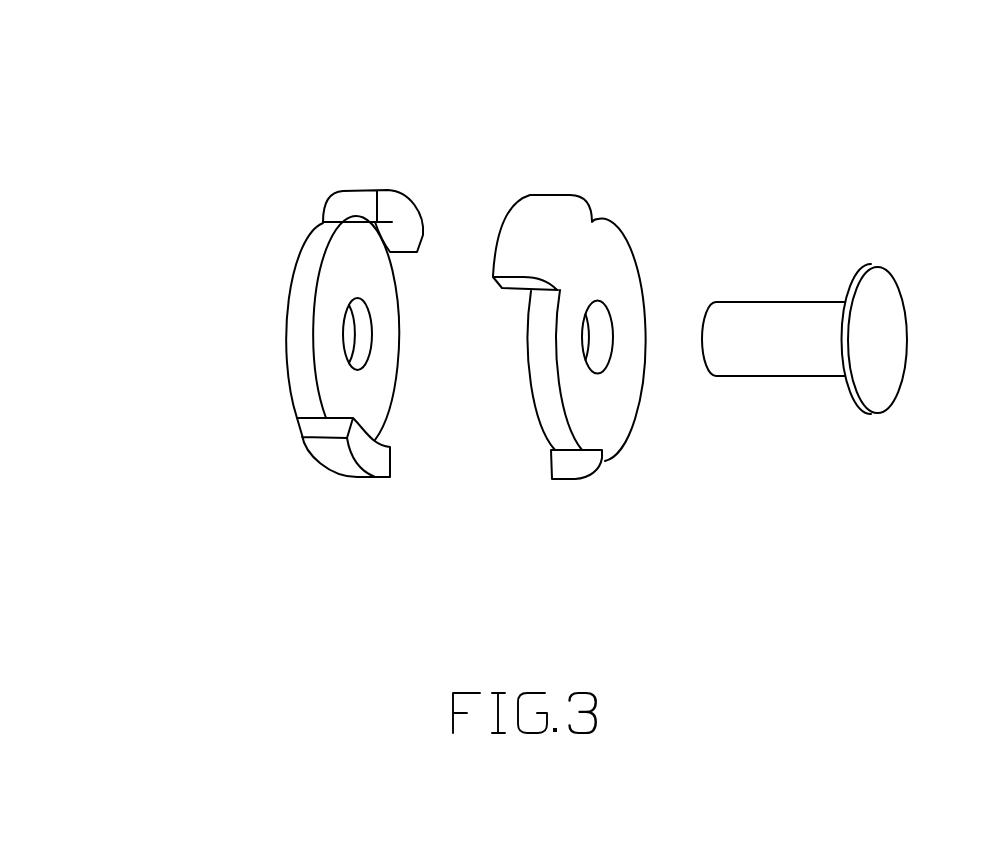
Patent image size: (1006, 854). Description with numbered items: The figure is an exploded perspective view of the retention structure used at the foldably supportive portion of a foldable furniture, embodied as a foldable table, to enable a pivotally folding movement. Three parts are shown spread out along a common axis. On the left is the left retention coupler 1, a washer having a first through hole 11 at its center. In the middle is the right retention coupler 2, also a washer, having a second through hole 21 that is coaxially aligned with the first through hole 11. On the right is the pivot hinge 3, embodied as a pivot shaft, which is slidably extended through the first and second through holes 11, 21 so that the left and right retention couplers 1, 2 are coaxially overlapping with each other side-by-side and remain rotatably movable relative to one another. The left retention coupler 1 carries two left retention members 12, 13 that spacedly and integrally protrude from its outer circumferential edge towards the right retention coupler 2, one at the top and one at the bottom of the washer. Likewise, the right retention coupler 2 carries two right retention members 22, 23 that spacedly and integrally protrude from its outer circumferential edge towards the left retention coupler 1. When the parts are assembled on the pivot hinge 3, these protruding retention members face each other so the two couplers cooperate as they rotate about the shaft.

The left retention coupler 1 is at (270, 327).
The first through hole 11 is at (452, 517).
The left retention member 12 is at (373, 193).
The left retention member 13 is at (302, 547).
The right retention coupler 2 is at (730, 152).
The second through hole 21 is at (733, 505).
The right retention member 22 is at (533, 222).
The right retention member 23 is at (615, 578).
The pivot hinge 3 is at (957, 247).